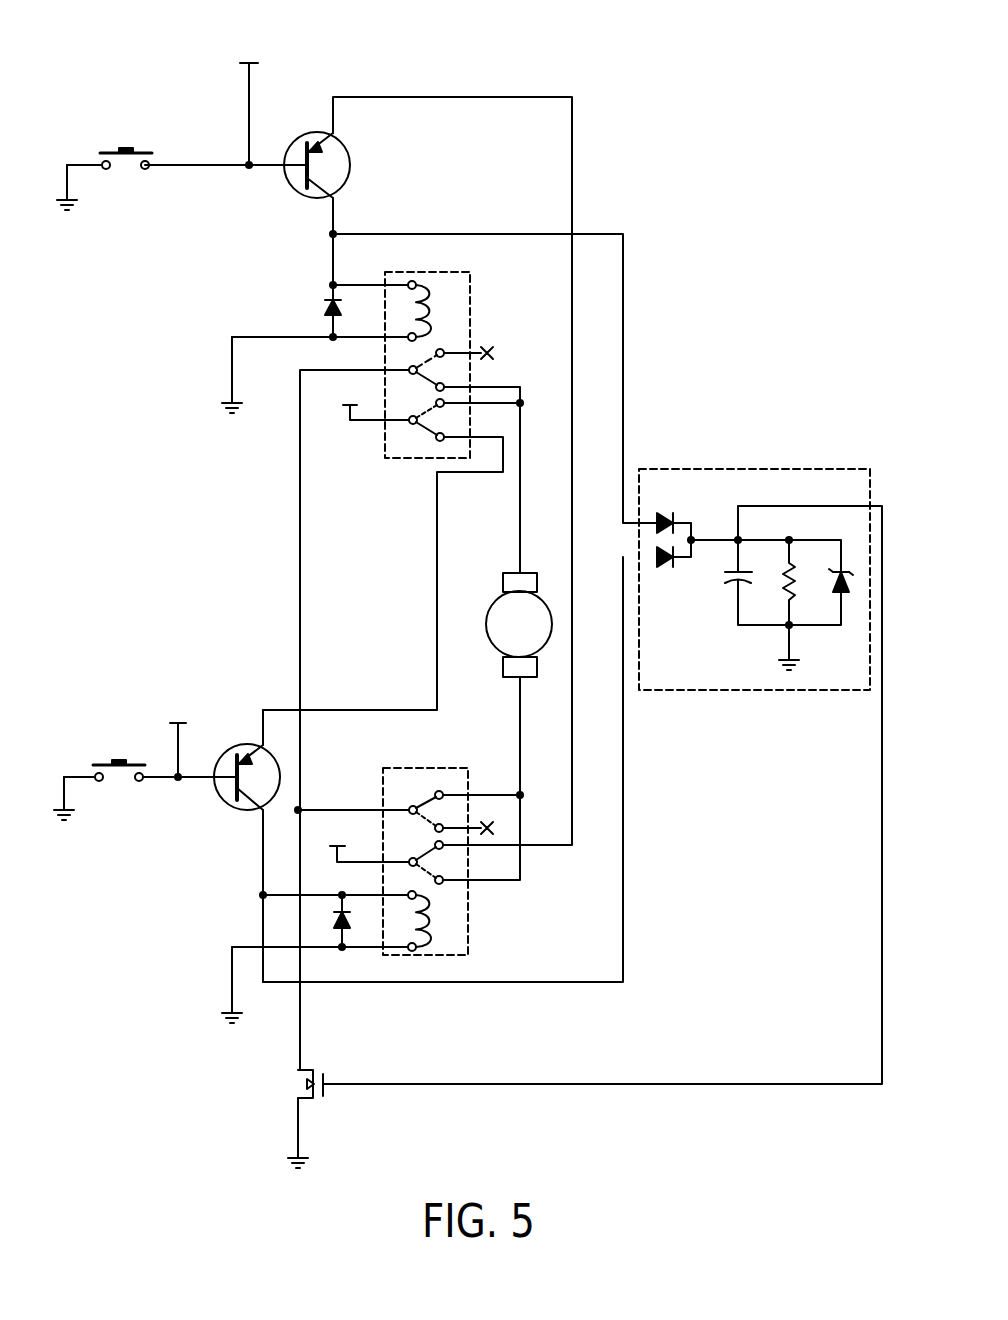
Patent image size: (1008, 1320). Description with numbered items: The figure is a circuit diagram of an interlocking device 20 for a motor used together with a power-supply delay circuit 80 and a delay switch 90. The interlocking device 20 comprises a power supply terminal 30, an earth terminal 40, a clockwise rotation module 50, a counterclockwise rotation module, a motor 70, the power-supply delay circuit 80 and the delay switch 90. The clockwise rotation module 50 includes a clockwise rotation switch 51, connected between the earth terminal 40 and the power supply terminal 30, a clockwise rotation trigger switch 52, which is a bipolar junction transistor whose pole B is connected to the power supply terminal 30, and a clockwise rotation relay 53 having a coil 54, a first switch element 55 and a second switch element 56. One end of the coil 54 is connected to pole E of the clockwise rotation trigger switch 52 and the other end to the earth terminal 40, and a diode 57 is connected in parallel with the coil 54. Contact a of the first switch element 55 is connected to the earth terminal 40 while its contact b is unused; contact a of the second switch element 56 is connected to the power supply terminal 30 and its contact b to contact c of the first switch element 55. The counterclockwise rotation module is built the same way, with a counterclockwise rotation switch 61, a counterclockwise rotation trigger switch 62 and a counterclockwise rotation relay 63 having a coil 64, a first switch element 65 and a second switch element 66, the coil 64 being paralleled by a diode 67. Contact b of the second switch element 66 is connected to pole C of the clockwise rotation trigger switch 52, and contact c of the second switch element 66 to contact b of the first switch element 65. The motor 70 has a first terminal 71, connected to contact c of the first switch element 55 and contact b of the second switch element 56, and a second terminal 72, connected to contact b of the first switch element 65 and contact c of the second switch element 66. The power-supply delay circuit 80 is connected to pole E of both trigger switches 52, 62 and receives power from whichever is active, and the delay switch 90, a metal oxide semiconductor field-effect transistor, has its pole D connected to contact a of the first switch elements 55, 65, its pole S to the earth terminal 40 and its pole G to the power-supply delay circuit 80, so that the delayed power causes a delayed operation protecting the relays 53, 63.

The interlocking device 20 is at (658, 263).
The power supply terminal 30 is at (233, 60).
The earth terminal 40 is at (77, 210).
The clockwise rotation module 50 is at (263, 220).
The clockwise rotation switch 51 is at (105, 148).
The clockwise rotation trigger switch 52 is at (315, 130).
The clockwise rotation relay 53 is at (452, 280).
The coil 54 is at (443, 308).
The first switch element 55 is at (458, 370).
The second switch element 56 is at (405, 438).
The diode 57 is at (325, 307).
The counterclockwise rotation switch 61 is at (99, 758).
The counterclockwise rotation trigger switch 62 is at (247, 742).
The counterclockwise rotation relay 63 is at (415, 765).
The coil 64 is at (433, 950).
The first switch element 65 is at (443, 808).
The second switch element 66 is at (448, 870).
The diode 67 is at (353, 940).
The motor 70 is at (495, 640).
The first terminal 71 is at (505, 576).
The second terminal 72 is at (515, 672).
The power-supply delay circuit 80 is at (717, 480).
The delay switch 90 is at (293, 1088).